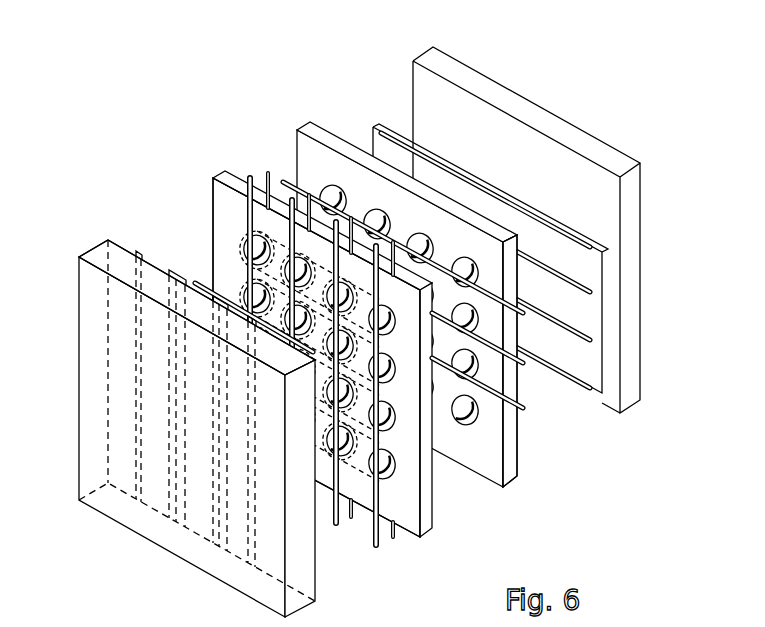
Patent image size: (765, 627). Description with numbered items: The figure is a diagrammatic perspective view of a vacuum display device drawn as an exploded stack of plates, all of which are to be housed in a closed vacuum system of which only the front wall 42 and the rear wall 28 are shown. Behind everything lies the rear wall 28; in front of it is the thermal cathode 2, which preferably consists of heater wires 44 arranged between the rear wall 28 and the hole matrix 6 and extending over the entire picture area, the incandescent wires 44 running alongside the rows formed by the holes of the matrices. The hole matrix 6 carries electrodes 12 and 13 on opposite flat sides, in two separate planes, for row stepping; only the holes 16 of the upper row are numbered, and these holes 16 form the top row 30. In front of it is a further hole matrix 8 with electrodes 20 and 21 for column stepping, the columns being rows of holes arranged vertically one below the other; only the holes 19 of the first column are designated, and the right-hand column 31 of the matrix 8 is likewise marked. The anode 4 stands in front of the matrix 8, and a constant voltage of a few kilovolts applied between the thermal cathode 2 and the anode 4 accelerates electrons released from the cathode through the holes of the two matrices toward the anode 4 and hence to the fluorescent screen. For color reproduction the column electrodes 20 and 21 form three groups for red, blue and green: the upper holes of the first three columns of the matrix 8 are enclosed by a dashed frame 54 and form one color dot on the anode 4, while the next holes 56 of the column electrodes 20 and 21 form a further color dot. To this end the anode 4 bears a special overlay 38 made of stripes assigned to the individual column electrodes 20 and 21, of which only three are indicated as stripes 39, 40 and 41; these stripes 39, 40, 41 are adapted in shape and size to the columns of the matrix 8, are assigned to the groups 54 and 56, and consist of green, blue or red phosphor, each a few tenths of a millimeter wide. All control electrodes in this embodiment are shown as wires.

The thermal cathode 2 is at (580, 233).
The anode 4 is at (317, 585).
The hole matrix 6 is at (514, 479).
The hole matrix 8 is at (430, 528).
The electrode 12 is at (537, 412).
The electrode 13 is at (528, 364).
The holes 16 is at (421, 250).
The holes 19 is at (395, 455).
The electrode 20 is at (292, 200).
The electrode 21 is at (377, 545).
The rear wall 28 is at (612, 158).
The top row 30 is at (378, 199).
The right hand column 31 is at (417, 511).
The overlay 38 is at (150, 280).
The stripe 39 is at (153, 503).
The stripe 40 is at (195, 527).
The stripe 41 is at (237, 545).
The front wall 42 is at (103, 507).
The heater wires 44 is at (508, 197).
The dashed frame 54 is at (240, 233).
The holes 56 is at (233, 281).